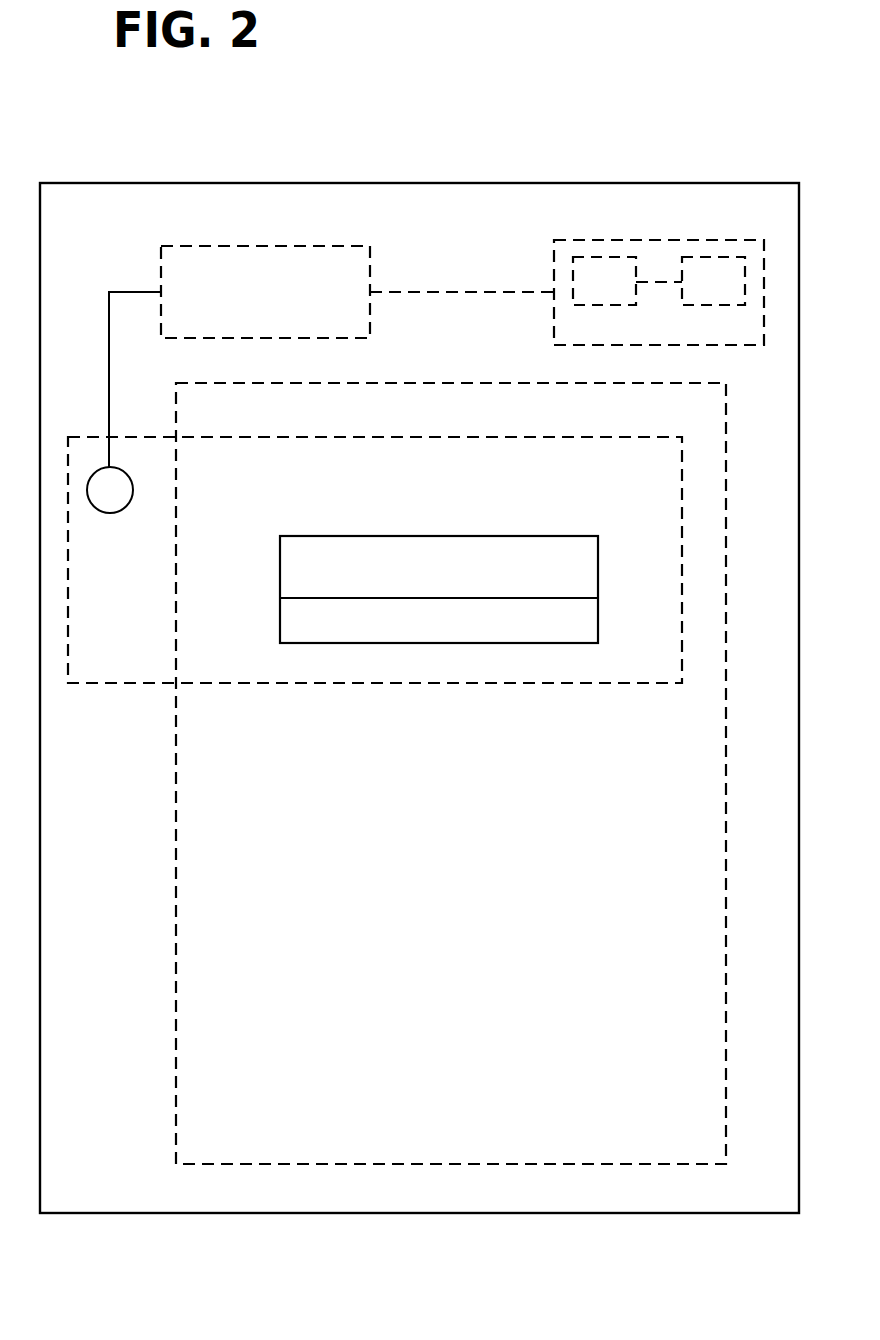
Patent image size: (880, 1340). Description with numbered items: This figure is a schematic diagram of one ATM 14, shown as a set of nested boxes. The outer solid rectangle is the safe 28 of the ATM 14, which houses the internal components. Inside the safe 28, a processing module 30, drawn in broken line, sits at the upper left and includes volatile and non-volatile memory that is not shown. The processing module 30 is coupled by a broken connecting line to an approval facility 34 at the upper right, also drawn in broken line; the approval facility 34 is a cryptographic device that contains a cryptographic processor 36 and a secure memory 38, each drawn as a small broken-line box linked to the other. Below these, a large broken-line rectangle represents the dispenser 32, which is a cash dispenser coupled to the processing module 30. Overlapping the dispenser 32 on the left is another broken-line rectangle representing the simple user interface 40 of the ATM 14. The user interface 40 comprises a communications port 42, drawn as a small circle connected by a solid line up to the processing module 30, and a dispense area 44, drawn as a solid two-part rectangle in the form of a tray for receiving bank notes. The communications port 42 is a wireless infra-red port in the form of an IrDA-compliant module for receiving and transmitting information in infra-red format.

The ATM 14 is at (706, 138).
The safe 28 is at (520, 182).
The processing module 30 is at (331, 246).
The dispenser 32 is at (480, 383).
The approval facility 34 is at (554, 243).
The cryptographic processor 36 is at (608, 257).
The secure memory 38 is at (717, 257).
The user interface 40 is at (367, 684).
The communications port 42 is at (105, 513).
The dispense area 44 is at (402, 536).